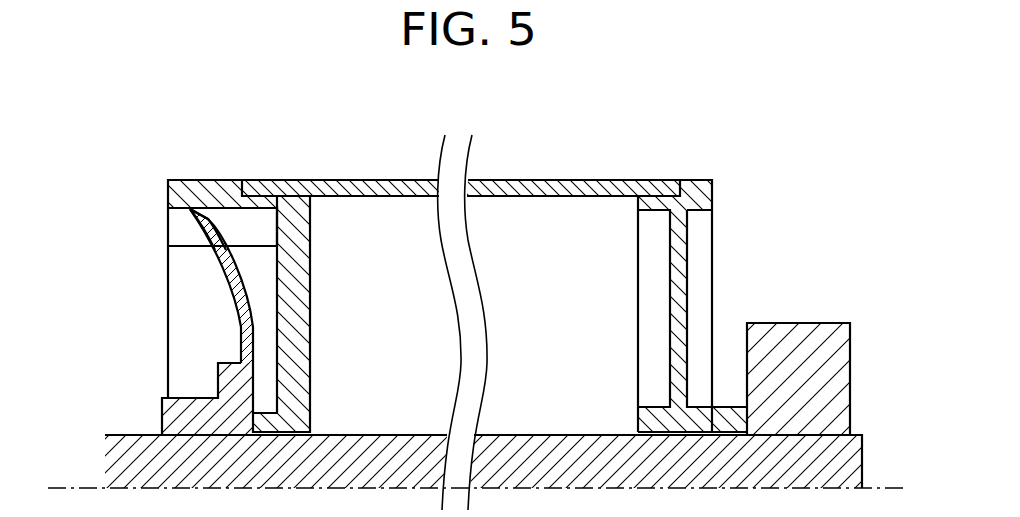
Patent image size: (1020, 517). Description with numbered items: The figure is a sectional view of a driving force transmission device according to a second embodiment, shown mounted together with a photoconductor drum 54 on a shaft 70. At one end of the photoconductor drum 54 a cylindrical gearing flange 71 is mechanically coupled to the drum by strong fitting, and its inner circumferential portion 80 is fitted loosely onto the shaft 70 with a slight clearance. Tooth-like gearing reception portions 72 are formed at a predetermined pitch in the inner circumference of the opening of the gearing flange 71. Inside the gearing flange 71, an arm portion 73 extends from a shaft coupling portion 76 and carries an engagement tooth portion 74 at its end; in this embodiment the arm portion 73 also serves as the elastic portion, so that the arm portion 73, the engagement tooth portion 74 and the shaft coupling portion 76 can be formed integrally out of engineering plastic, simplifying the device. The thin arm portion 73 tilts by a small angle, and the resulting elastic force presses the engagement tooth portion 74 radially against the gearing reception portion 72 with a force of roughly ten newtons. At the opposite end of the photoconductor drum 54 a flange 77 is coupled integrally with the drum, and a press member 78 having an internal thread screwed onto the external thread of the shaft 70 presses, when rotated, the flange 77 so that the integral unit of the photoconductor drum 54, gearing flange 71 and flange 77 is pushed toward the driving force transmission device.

The photoconductor drum 54 is at (552, 188).
The shaft 70 is at (550, 433).
The gearing flange 71 is at (224, 188).
The gearing reception portions 72 is at (258, 222).
The arm portion 73 is at (232, 295).
The engagement tooth portion 74 is at (203, 227).
The shaft coupling portion 76 is at (200, 397).
The flange 77 is at (697, 185).
The press member 78 is at (792, 330).
The inner circumferential portion 80 is at (312, 390).